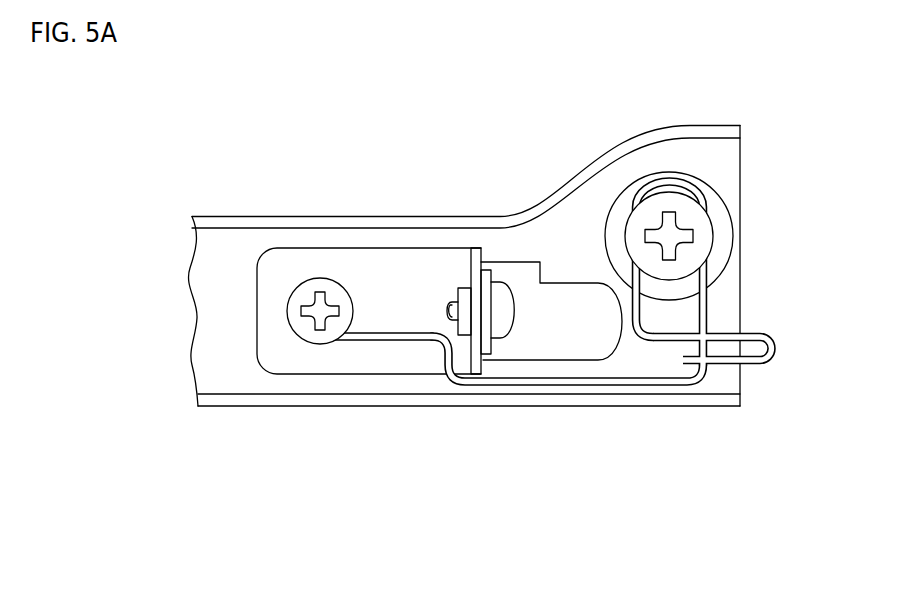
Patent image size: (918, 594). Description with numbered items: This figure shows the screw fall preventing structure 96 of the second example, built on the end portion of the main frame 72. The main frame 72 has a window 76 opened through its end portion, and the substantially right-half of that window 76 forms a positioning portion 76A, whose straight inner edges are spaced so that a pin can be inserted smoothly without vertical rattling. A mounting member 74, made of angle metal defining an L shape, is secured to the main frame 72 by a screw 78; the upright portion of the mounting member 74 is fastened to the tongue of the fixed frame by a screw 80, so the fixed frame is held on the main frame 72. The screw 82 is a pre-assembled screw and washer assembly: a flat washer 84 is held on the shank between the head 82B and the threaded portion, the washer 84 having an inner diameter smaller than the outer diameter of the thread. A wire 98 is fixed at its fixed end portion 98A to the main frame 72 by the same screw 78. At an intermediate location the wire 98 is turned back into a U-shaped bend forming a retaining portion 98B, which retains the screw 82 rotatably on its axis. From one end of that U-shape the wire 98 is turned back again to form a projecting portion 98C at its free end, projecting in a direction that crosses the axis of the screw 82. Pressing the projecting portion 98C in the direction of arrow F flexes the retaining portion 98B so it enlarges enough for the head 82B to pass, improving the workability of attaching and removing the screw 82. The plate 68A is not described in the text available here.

The main frame 72 is at (221, 216).
The mounting member 74 is at (392, 272).
The window 76 is at (532, 322).
The positioning portion 76A is at (572, 308).
The screw 78 is at (322, 278).
The screw 80 is at (510, 287).
The screw 82 is at (731, 200).
The head 82B is at (712, 238).
The washer 84 is at (722, 218).
The plate 68A is at (483, 258).
The screw fall preventing structure 96 is at (528, 450).
The wire 98 is at (447, 382).
The fixed end portion 98A is at (338, 348).
The retaining portion 98B is at (633, 190).
The projecting portion 98C is at (727, 328).
The arrow F is at (778, 350).